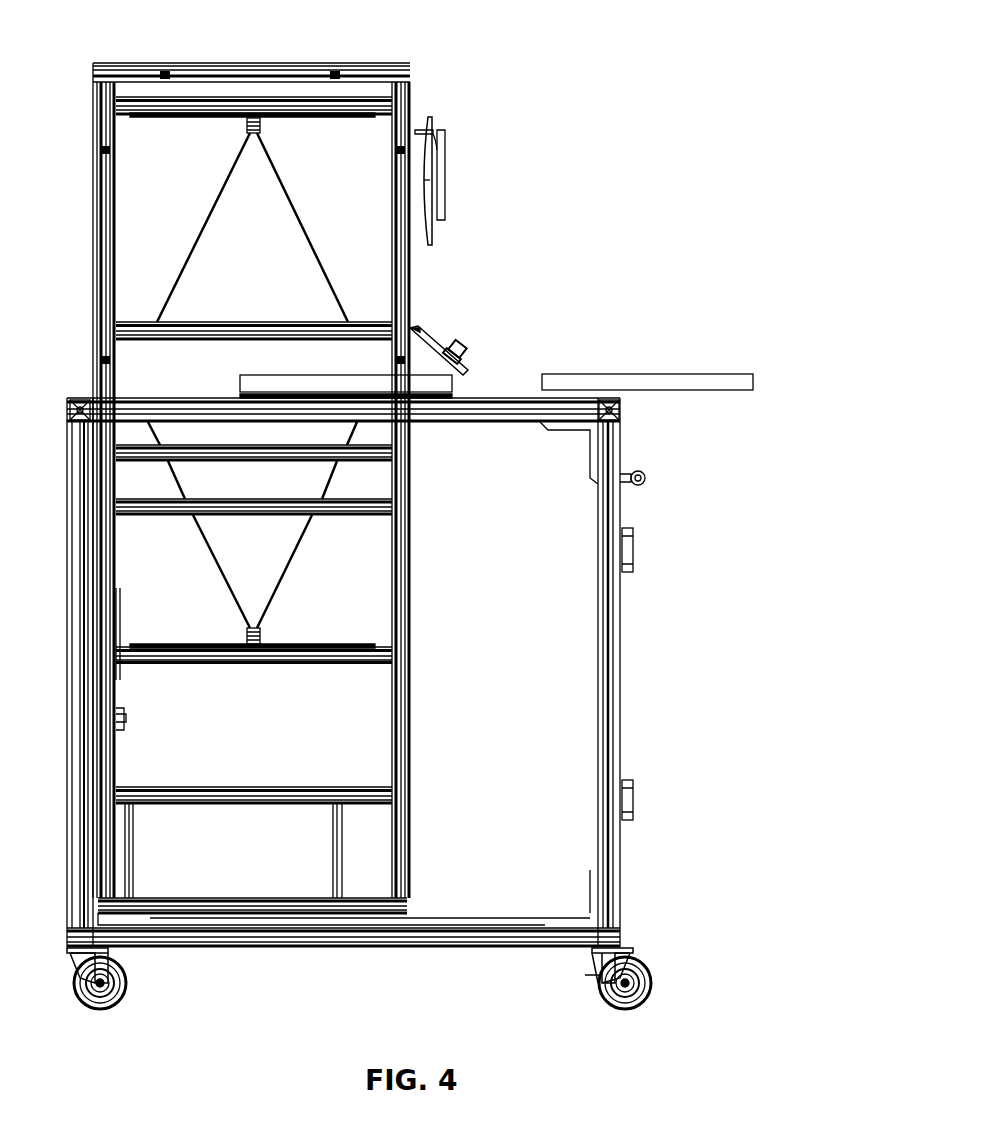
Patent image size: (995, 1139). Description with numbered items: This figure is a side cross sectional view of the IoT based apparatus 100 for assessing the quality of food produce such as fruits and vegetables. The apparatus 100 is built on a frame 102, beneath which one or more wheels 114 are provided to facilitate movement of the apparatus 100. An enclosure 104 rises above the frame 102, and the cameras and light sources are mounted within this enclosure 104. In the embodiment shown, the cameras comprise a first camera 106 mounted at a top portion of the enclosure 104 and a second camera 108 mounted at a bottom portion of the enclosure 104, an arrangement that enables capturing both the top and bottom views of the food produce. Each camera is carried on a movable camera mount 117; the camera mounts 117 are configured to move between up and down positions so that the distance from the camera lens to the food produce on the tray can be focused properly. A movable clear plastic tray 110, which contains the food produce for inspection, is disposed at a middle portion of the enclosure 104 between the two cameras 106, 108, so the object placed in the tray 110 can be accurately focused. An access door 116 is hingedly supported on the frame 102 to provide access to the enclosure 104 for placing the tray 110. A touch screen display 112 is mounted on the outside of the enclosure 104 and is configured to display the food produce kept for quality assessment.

The IoT based apparatus 100 is at (568, 62).
The frame 102 is at (621, 432).
The enclosure 104 is at (409, 265).
The first camera 106 is at (252, 136).
The second camera 108 is at (253, 627).
The movable clear plastic tray 110 is at (653, 386).
The touch screen display 112 is at (445, 172).
The wheels 114 is at (652, 985).
The access door 116 is at (423, 337).
The camera mounts 117 is at (333, 118).